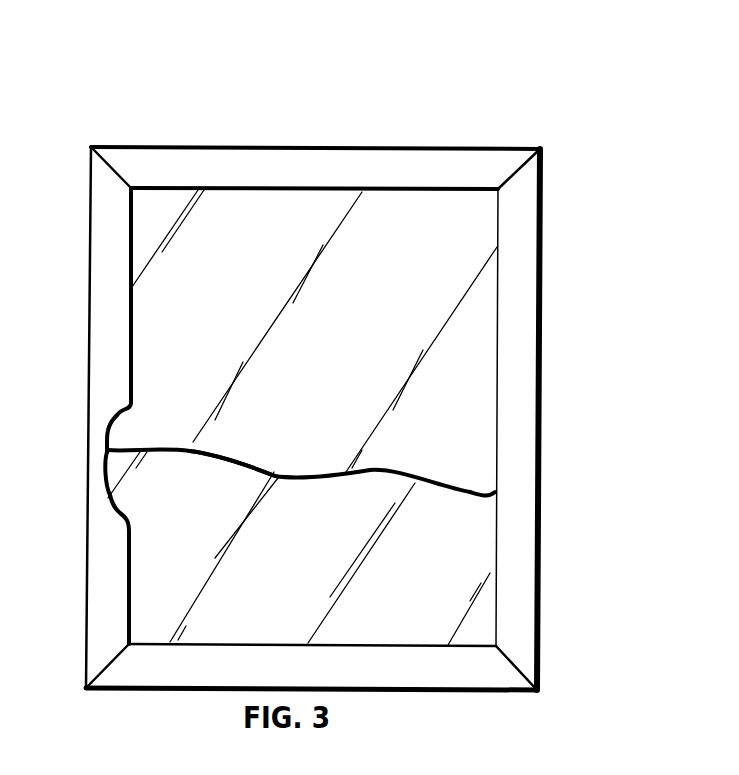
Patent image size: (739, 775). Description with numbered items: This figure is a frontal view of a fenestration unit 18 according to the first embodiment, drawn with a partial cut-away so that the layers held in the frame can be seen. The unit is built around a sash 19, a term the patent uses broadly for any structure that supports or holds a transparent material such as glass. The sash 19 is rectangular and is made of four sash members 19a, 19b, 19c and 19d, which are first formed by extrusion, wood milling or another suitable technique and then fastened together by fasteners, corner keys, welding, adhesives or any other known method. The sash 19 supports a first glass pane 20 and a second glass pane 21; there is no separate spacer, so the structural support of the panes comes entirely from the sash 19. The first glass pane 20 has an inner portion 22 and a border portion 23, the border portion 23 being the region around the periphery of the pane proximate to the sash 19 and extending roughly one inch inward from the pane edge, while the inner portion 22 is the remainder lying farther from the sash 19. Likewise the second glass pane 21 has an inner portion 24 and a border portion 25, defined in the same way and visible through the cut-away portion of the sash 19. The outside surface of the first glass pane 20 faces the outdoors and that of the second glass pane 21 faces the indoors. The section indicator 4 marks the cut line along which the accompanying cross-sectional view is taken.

The fenestration unit 18 is at (566, 99).
The sash 19 is at (517, 289).
The sash member 19a is at (528, 397).
The sash member 19b is at (413, 683).
The sash member 19c is at (101, 601).
The sash member 19d is at (334, 157).
The first glass pane 20 is at (422, 593).
The second glass pane 21 is at (382, 343).
The inner portion 22 is at (294, 492).
The border portion 23 is at (121, 506).
The inner portion 24 is at (218, 440).
The border portion 25 is at (121, 433).
The section line 4- 4 is at (85, 263).